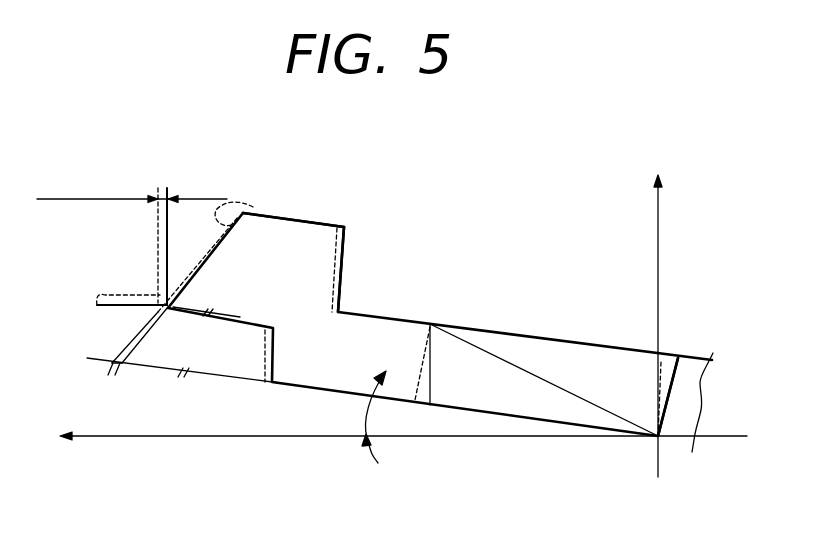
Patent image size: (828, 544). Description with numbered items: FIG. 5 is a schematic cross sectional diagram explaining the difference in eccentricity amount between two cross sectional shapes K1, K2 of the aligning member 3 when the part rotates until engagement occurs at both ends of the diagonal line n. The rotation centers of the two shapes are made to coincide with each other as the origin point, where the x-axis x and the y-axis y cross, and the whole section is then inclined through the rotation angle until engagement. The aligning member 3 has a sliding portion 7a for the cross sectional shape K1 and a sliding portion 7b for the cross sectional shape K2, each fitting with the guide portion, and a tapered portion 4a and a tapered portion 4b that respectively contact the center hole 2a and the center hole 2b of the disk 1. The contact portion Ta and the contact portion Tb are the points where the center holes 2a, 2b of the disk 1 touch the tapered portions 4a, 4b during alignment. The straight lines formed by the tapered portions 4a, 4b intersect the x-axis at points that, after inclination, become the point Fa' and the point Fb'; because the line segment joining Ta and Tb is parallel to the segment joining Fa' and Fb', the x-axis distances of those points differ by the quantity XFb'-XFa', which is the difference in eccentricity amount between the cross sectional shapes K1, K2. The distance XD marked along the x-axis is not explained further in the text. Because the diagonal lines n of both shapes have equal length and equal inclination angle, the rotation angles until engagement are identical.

The disk 1 is at (87, 248).
The center hole 2a is at (170, 254).
The center hole 2b is at (158, 226).
The aligning member 3 is at (312, 383).
The tapered portion 4a is at (212, 255).
The tapered portion 4b is at (253, 207).
The sliding portion 7a is at (673, 383).
The sliding portion 7b is at (672, 360).
The cross sectional shape K1 is at (342, 283).
The cross sectional shape K2 is at (347, 252).
The contact portion Ta is at (170, 312).
The contact portion Tb is at (97, 295).
The point Fa after inclination Fa' is at (135, 397).
The point Fb after inclination Fb' is at (158, 348).
The diagonal line n is at (527, 370).
The distance XD is at (431, 481).
The difference in eccentricity amount XFb'-XFa' is at (124, 188).
The x-axis x is at (395, 437).
The y-axis y is at (656, 311).